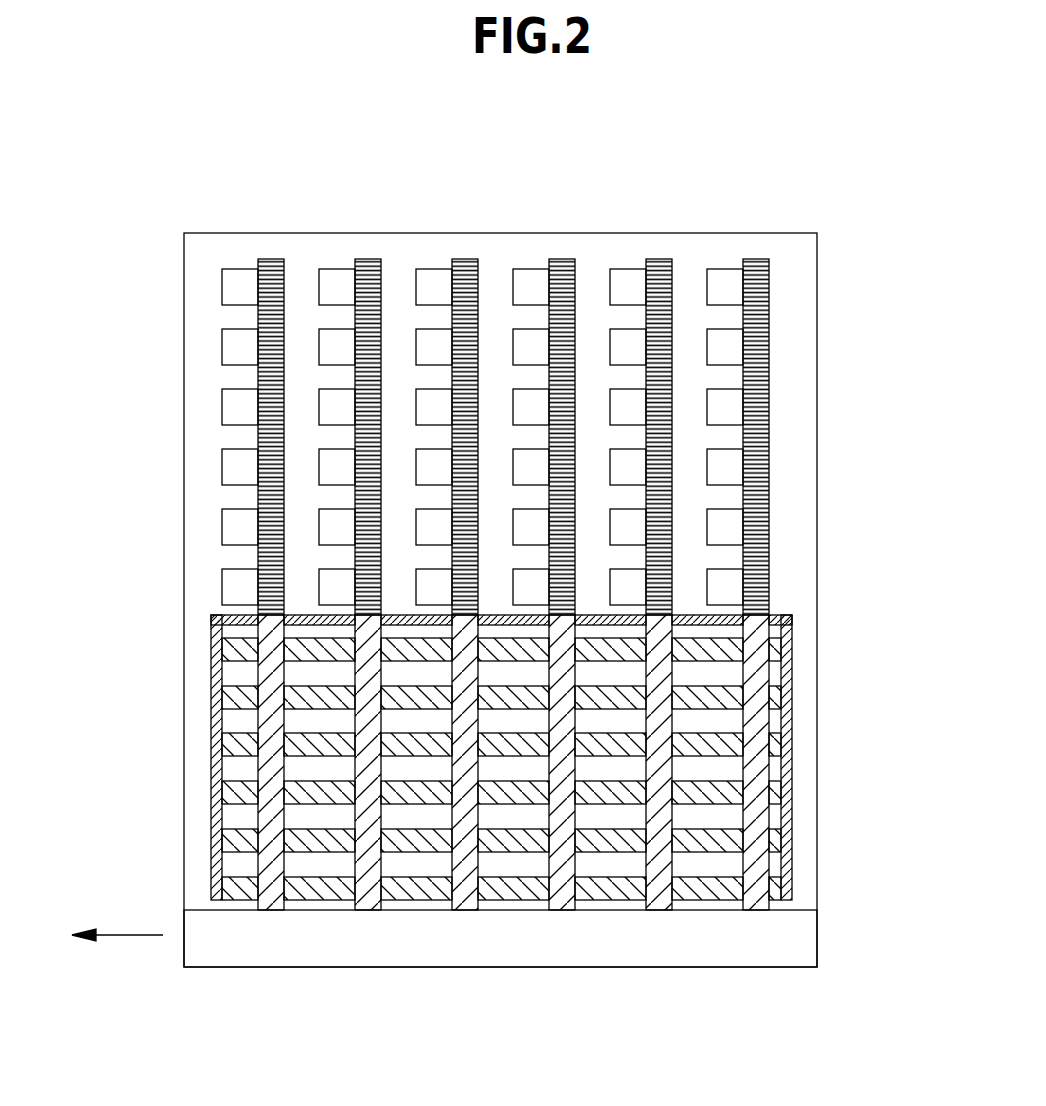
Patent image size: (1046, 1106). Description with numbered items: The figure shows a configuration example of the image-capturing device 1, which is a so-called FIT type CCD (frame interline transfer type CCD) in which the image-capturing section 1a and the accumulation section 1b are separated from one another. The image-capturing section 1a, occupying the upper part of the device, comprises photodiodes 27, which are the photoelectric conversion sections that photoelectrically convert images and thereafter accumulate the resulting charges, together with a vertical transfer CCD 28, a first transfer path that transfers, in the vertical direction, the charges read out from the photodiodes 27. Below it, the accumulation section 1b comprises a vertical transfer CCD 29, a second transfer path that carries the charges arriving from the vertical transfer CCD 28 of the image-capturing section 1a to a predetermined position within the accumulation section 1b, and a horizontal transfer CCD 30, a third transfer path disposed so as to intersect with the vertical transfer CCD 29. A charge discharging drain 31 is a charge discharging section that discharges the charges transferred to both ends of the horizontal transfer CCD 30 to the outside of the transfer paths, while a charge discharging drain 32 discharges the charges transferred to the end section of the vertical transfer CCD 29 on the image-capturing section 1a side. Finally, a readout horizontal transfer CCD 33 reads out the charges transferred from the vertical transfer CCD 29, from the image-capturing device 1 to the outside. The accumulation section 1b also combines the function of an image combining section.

The image-capturing device 1 is at (610, 186).
The image-capturing section 1a is at (885, 253).
The accumulation section 1b is at (885, 623).
The photodiodes 27 is at (240, 288).
The vertical transfer CCD 28 is at (757, 268).
The vertical transfer CCD 29 is at (755, 634).
The horizontal transfer CCD 30 is at (722, 697).
The charge discharging drain 31 is at (218, 757).
The charge discharging drain 32 is at (305, 617).
The readout horizontal transfer CCD 33 is at (517, 950).